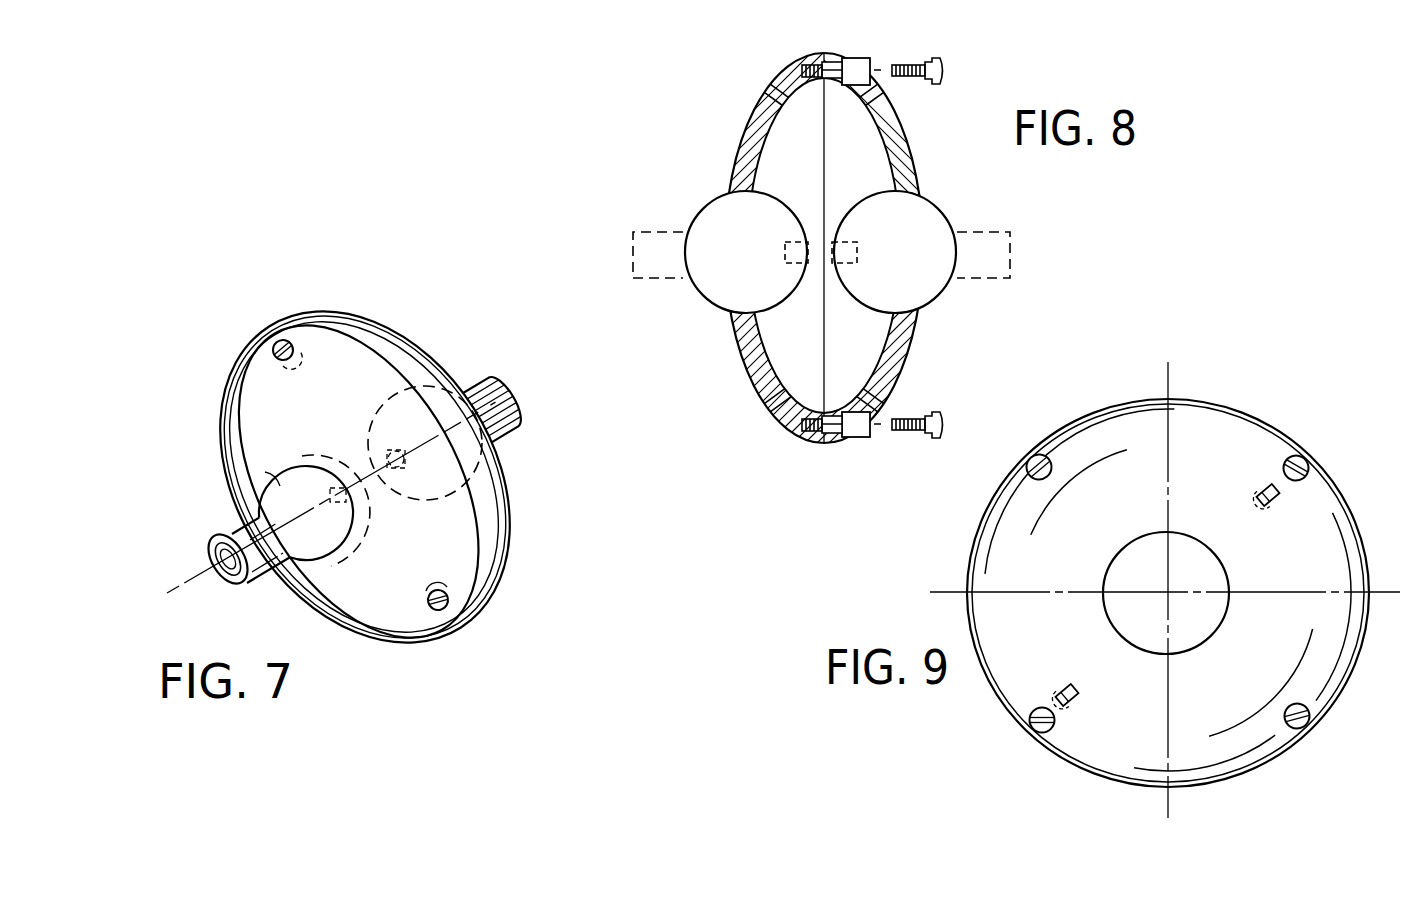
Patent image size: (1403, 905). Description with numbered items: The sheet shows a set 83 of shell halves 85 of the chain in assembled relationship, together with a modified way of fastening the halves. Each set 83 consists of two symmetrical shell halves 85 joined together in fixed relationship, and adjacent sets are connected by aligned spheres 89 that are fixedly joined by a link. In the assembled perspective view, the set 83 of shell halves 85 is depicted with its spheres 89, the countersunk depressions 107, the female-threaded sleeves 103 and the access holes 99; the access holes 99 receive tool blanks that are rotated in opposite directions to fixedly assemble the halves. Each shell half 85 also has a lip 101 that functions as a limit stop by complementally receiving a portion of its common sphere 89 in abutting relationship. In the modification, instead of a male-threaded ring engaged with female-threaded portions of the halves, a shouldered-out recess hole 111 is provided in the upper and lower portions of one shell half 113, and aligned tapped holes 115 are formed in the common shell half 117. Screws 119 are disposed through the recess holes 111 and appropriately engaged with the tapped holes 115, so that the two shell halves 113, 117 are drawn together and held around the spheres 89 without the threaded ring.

In FIG. 7, the set 83 is at (343, 334).
In FIG. 7, the shell half 85 is at (338, 413).
In FIG. 7, the sphere 89 is at (278, 483).
In FIG. 8, the sphere 89 is at (927, 267).
In FIG. 7, the access hole 99 is at (281, 347).
In FIG. 8, the access hole 99 is at (895, 115).
In FIG. 9, the access hole 99 is at (1280, 489).
In FIG. 8, the lip 101 is at (737, 192).
In FIG. 9, the lip 101 is at (1228, 577).
In FIG. 7, the female-threaded sleeve 103 is at (213, 542).
In FIG. 8, the female-threaded sleeve 103 is at (1010, 248).
In FIG. 7, the countersunk depression 107 is at (370, 500).
In FIG. 8, the countersunk depression 107 is at (780, 257).
In FIG. 8, the shouldered-out recess hole 111 is at (853, 63).
In FIG. 8, the shell half 113 is at (902, 163).
In FIG. 9, the shell half 113 is at (1217, 482).
In FIG. 8, the tapped hole 115 is at (817, 57).
In FIG. 8, the shell half 117 is at (743, 143).
In FIG. 8, the screw 119 is at (945, 65).
In FIG. 9, the screw 119 is at (1307, 455).